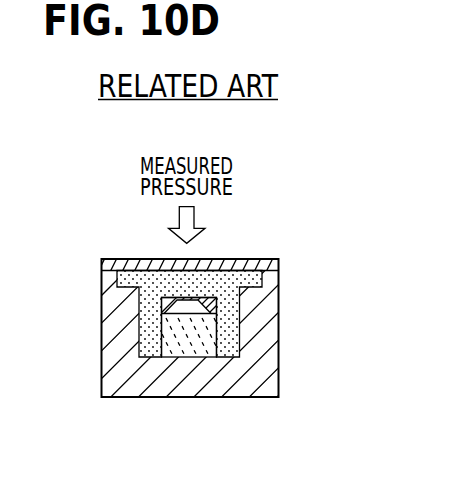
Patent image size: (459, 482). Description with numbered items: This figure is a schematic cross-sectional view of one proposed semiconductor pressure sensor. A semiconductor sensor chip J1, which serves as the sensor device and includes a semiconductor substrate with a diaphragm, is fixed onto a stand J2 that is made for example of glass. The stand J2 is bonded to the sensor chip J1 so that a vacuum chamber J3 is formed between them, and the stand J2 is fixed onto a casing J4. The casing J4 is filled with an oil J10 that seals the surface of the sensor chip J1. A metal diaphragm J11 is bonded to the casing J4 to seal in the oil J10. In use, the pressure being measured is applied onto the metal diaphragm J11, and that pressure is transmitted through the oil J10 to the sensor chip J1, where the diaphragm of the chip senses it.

The sensor chip J1 is at (216, 298).
The stand J2 is at (201, 330).
The vacuum chamber J3 is at (187, 314).
The casing J4 is at (265, 355).
The oil J10 is at (147, 335).
The metal diaphragm J11 is at (133, 265).